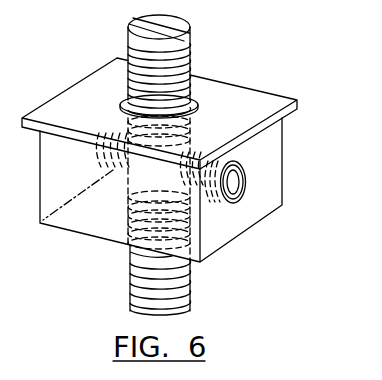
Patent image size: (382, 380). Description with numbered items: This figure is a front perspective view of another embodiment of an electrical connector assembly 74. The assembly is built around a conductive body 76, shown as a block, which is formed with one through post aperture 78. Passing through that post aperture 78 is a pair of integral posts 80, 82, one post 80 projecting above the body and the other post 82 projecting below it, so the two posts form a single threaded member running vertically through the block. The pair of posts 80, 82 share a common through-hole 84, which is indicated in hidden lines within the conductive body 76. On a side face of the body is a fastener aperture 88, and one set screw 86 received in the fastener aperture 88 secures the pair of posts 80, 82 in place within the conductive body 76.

The connector assembly 74 is at (59, 50).
The conductive body 76 is at (295, 98).
The through post aperture 78 is at (200, 100).
The post 80 is at (190, 56).
The post 82 is at (190, 288).
The through-hole 84 is at (153, 176).
The set screw 86 is at (233, 182).
The fastener aperture 88 is at (245, 191).